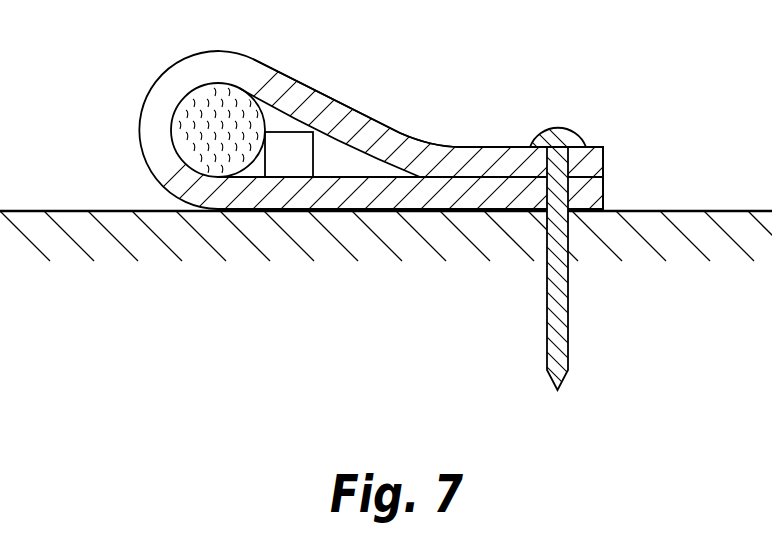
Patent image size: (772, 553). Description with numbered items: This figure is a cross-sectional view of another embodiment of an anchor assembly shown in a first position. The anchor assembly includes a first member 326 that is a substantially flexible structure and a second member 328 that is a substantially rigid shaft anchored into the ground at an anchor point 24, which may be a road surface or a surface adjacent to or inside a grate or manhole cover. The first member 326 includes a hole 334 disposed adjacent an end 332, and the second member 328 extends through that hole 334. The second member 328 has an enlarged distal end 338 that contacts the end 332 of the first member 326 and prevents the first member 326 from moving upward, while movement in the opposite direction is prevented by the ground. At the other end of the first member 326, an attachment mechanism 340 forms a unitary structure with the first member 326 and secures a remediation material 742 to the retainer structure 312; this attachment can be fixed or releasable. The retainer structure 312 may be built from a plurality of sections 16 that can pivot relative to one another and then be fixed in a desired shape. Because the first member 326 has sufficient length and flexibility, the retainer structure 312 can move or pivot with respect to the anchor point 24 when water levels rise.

The section 16 is at (300, 130).
The anchor point 24 is at (570, 214).
The retainer structure 312 is at (314, 152).
The first member 326 is at (396, 130).
The second member 328 is at (557, 312).
The end 332 is at (595, 146).
The hole 334 is at (572, 189).
The enlarged distal end 338 is at (560, 126).
The attachment mechanism 340 is at (188, 59).
The remediation material 742 is at (181, 100).